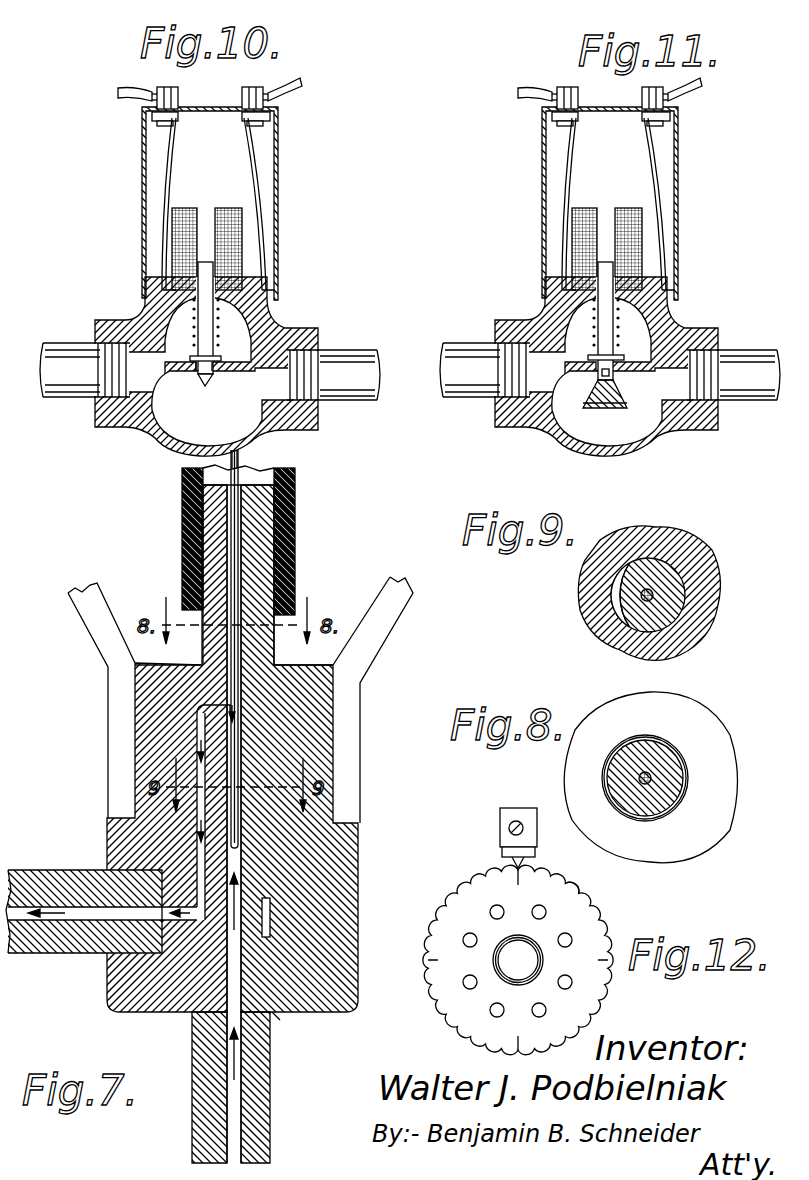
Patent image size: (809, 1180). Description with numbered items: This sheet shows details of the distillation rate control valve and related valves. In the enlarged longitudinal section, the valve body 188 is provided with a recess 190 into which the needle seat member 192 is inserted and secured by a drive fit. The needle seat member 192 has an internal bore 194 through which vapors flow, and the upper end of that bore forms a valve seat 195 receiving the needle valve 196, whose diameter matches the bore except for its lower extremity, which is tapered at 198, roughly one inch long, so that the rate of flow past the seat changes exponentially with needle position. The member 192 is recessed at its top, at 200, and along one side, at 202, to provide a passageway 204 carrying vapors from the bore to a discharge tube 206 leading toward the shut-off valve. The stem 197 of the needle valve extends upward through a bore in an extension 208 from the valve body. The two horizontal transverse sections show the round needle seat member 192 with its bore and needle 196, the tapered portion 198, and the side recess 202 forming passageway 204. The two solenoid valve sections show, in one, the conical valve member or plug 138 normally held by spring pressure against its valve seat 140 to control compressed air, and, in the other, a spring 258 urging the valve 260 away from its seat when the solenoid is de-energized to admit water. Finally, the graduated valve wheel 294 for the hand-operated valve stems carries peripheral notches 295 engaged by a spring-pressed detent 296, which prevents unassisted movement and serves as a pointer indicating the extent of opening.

In FIG. 10, the conical valve member or plug 138 is at (217, 352).
In FIG. 10, the valve seat 140 is at (193, 384).
In FIG. 11, the spring 258 is at (616, 346).
In FIG. 11, the valve 260 is at (609, 398).
In FIG. 7, the valve body 188 is at (360, 890).
In FIG. 7, the recess 190 is at (280, 1020).
In FIG. 7, the needle seat member 192 is at (270, 1066).
In FIG. 9, the needle seat member 192 is at (660, 560).
In FIG. 8, the needle seat member 192 is at (616, 762).
In FIG. 7, the internal bore 194 is at (232, 1118).
In FIG. 7, the valve seat 195 is at (243, 708).
In FIG. 7, the needle valve 196 is at (238, 750).
In FIG. 9, the needle valve 196 is at (654, 595).
In FIG. 8, the needle valve 196 is at (650, 775).
In FIG. 7, the stem 197 is at (240, 468).
In FIG. 7, the taper 198 is at (272, 668).
In FIG. 9, the taper 198 is at (645, 655).
In FIG. 8, the taper 198 is at (648, 792).
In FIG. 7, the top recess 200 is at (220, 713).
In FIG. 7, the side recess 202 is at (205, 853).
In FIG. 9, the side recess 202 is at (611, 606).
In FIG. 7, the passageway 204 is at (197, 847).
In FIG. 9, the passageway 204 is at (616, 593).
In FIG. 7, the discharge tube 206 is at (52, 953).
In FIG. 7, the extension 208 is at (270, 590).
In FIG. 12, the graduated valve wheel 294 is at (590, 907).
In FIG. 12, the notches 295 is at (566, 884).
In FIG. 12, the spring-pressed detent 296 is at (500, 845).